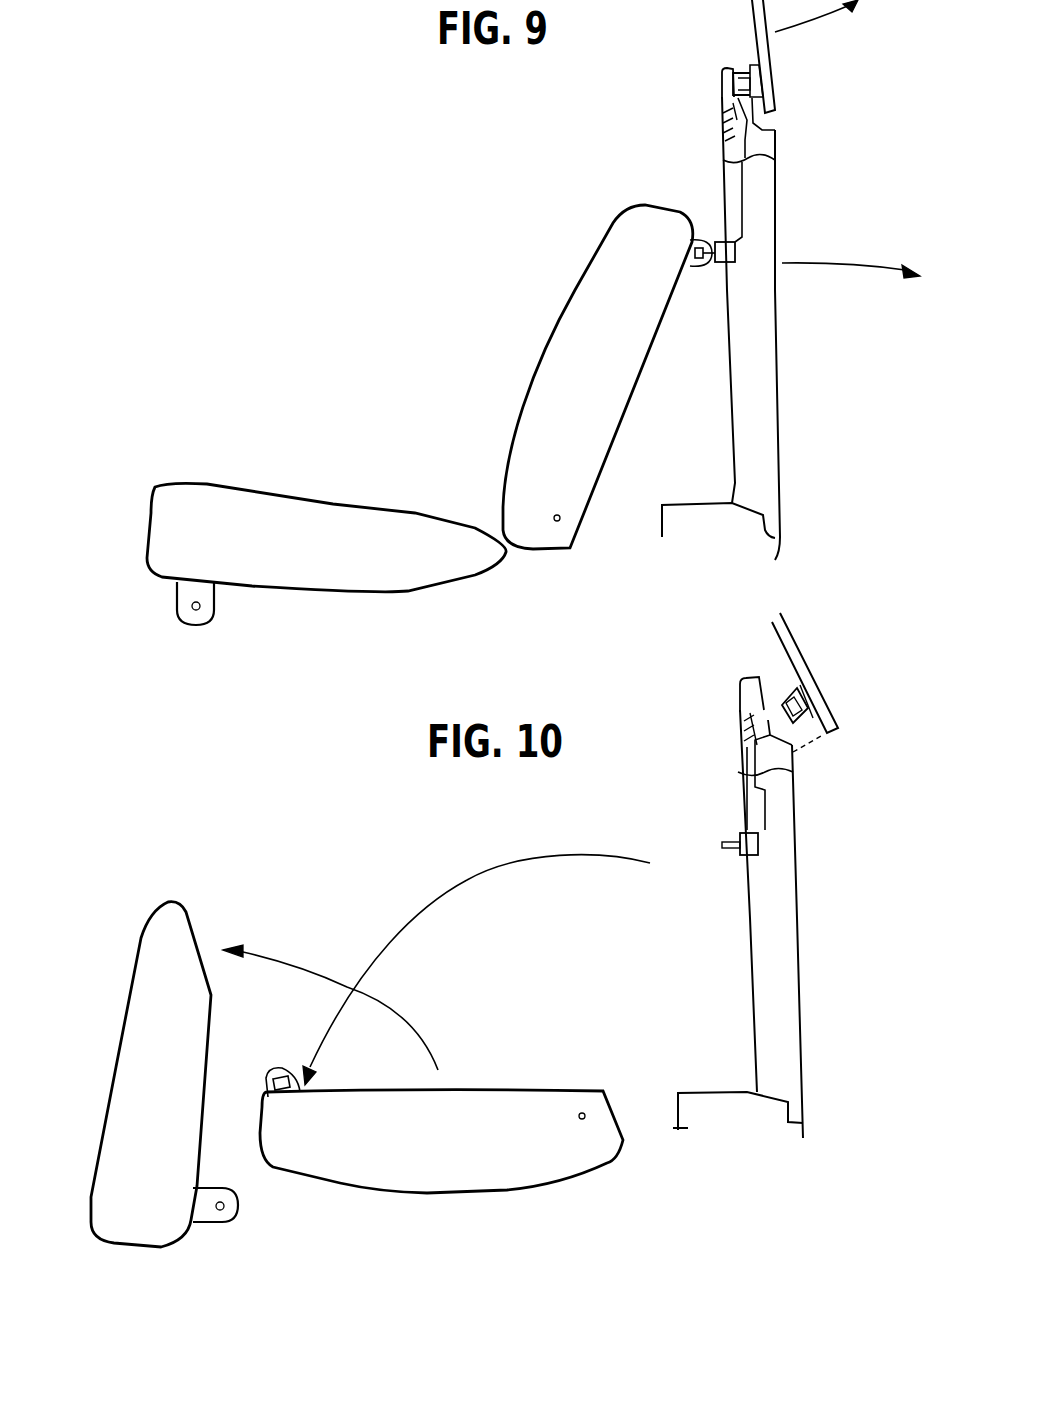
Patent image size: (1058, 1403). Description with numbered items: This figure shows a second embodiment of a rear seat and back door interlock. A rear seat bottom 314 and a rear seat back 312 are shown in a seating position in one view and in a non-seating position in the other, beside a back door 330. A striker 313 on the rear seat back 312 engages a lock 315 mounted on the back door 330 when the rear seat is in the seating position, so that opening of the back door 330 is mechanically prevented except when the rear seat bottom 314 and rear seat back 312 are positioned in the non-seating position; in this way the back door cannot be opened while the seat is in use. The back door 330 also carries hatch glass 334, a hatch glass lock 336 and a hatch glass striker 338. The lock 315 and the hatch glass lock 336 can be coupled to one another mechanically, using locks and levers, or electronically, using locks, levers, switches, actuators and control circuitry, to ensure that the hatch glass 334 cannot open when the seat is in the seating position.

In FIG. 9, the rear seat back 312 is at (547, 337).
In FIG. 10, the rear seat back 312 is at (530, 1190).
In FIG. 9, the striker 313 is at (693, 270).
In FIG. 10, the striker 313 is at (283, 1093).
In FIG. 9, the rear seat bottom 314 is at (277, 590).
In FIG. 10, the rear seat bottom 314 is at (130, 1250).
In FIG. 9, the lock 315 is at (740, 243).
In FIG. 10, the lock 315 is at (762, 843).
In FIG. 9, the back door 330 is at (778, 377).
In FIG. 10, the back door 330 is at (802, 1003).
In FIG. 9, the hatch glass 334 is at (755, 40).
In FIG. 10, the hatch glass 334 is at (827, 692).
In FIG. 9, the hatch glass lock 336 is at (720, 88).
In FIG. 10, the hatch glass lock 336 is at (738, 707).
In FIG. 9, the hatch glass striker 338 is at (770, 70).
In FIG. 10, the hatch glass striker 338 is at (783, 705).